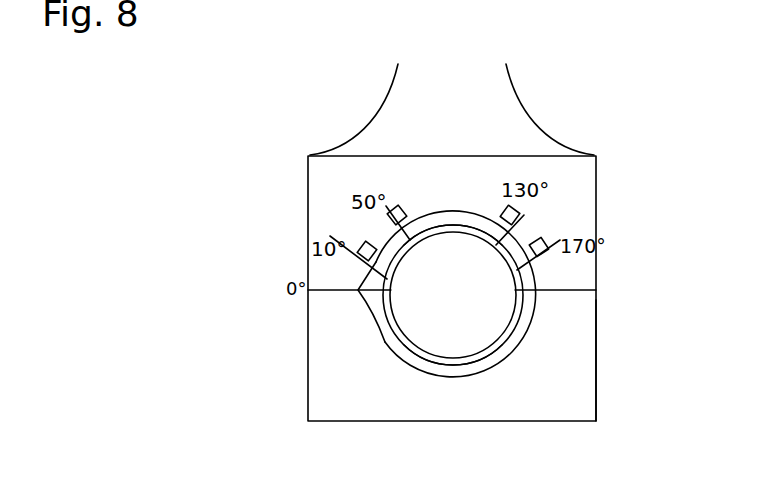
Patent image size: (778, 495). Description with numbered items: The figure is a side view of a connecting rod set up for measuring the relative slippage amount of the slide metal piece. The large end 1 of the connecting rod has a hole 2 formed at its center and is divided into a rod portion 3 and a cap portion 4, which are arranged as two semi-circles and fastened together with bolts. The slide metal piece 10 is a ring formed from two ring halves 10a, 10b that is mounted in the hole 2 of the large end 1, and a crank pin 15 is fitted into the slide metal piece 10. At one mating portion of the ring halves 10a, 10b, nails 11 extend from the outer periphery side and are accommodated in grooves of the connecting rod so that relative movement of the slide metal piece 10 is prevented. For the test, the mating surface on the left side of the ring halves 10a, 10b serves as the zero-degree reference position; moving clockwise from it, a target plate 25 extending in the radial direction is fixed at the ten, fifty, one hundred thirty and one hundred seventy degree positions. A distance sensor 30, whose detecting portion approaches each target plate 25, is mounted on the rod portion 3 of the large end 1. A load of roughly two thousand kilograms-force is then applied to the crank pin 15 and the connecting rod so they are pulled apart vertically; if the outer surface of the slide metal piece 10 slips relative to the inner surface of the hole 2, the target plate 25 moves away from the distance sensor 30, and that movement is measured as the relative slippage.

The large end 1 is at (569, 124).
The hole 2 is at (513, 347).
The rod portion 3 is at (582, 208).
The cap portion 4 is at (596, 377).
The slide metal piece 10 is at (463, 212).
The ring half 10a is at (441, 224).
The ring half 10b is at (418, 360).
The nails 11 is at (358, 290).
The crank pin 15 is at (477, 338).
The target plate 25 is at (388, 216).
The distance sensor 30 is at (387, 206).